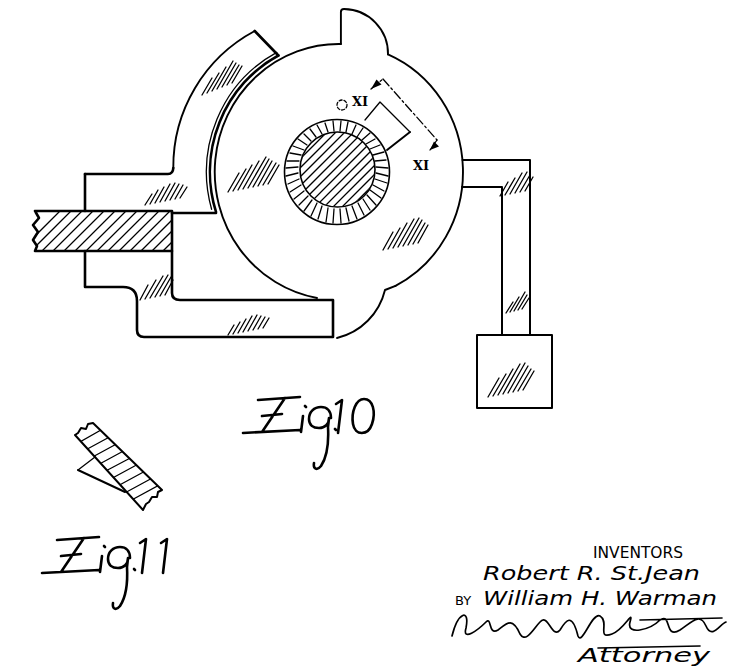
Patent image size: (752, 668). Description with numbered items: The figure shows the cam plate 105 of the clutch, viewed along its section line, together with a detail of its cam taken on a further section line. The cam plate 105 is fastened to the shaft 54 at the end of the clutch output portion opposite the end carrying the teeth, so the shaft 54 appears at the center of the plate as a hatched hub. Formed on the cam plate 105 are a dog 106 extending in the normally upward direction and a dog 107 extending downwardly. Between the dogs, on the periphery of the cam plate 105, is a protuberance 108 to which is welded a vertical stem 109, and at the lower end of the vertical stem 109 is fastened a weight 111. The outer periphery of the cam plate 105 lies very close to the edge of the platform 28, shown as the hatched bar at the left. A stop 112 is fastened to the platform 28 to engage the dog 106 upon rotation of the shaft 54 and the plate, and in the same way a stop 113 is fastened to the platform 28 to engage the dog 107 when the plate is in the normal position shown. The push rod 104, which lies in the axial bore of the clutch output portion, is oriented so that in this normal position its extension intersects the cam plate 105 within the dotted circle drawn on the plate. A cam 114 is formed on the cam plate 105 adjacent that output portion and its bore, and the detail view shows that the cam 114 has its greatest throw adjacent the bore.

In FIG. 10, the platform 28 is at (53, 217).
In FIG. 10, the shaft 54 is at (315, 153).
In FIG. 10, the push rod 104 is at (339, 97).
In FIG. 10, the cam plate 105 is at (247, 235).
In FIG. 11, the cam plate 105 is at (120, 460).
In FIG. 10, the dog 106 is at (370, 43).
In FIG. 10, the dog 107 is at (367, 312).
In FIG. 10, the protuberance 108 is at (490, 165).
In FIG. 10, the vertical stem 109 is at (520, 244).
In FIG. 10, the weight 111 is at (540, 367).
In FIG. 10, the stop 112 is at (142, 188).
In FIG. 10, the stop 113 is at (275, 327).
In FIG. 10, the cam 114 is at (392, 125).
In FIG. 11, the cam 114 is at (90, 468).